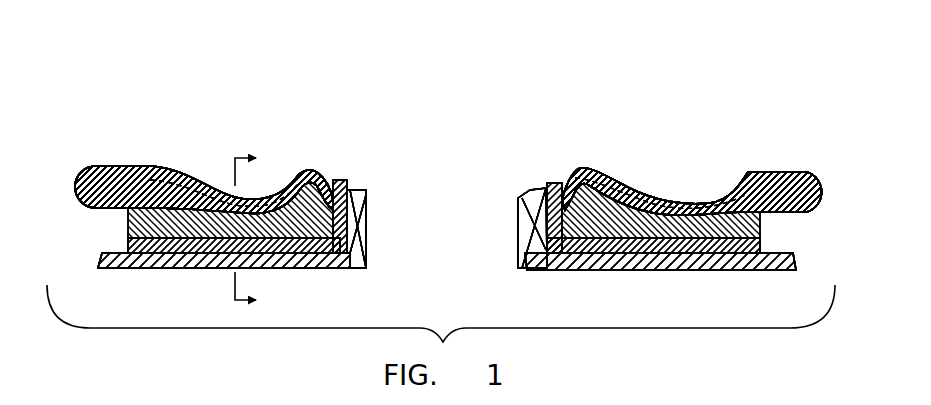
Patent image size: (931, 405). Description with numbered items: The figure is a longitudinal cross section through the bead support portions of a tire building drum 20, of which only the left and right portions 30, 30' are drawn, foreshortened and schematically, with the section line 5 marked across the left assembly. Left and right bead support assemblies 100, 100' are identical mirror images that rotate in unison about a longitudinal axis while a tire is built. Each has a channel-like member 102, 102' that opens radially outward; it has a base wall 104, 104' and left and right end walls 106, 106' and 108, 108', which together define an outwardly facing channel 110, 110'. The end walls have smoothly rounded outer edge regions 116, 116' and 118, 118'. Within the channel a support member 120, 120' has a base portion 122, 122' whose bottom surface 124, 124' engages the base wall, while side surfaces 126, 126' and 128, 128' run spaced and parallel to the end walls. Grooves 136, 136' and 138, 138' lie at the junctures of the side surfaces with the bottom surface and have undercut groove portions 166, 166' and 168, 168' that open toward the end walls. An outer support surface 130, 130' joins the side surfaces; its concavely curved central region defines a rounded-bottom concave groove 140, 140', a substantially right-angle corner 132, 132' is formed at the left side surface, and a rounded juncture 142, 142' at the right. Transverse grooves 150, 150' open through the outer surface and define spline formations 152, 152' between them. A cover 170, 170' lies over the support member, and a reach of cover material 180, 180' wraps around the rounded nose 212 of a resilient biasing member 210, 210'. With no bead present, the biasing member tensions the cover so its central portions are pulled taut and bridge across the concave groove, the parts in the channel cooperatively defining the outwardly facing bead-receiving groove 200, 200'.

The tire building drum 20 is at (510, 228).
The left portion of the tire building drum 30 is at (384, 210).
The right portion of the tire building drum 30' is at (508, 212).
The section line 5- 5 is at (253, 234).
The left bead support assembly 100 is at (215, 128).
The right bead support assembly 100' is at (692, 129).
The channel-like member 102 is at (210, 274).
The channel-like member 102' is at (660, 285).
The base wall 104 is at (234, 277).
The base wall 104' is at (653, 266).
The left end wall 106 is at (211, 237).
The left end wall 106' is at (694, 246).
The right end wall 108 is at (384, 225).
The right end wall 108' is at (512, 228).
The outwardly facing channel 110 is at (209, 154).
The outwardly facing channel 110' is at (692, 142).
The outer edge region 116 is at (190, 210).
The outer edge region 116' is at (699, 211).
The outer edge region 118 is at (357, 199).
The outer edge region 118' is at (563, 184).
The support member 120 is at (222, 285).
The support member 120' is at (660, 287).
The base portion 122 is at (204, 157).
The base portion 122' is at (692, 170).
The bottom surface 124 is at (234, 266).
The bottom surface 124' is at (652, 266).
The left side surface 126 is at (186, 174).
The left side surface 126' is at (719, 188).
The right side surface 128 is at (397, 193).
The right side surface 128' is at (517, 191).
The outer support surface 130 is at (237, 146).
The outer support surface 130' is at (692, 141).
The right-angle corner 132 is at (204, 144).
The right-angle corner 132' is at (692, 177).
The groove 136 is at (193, 254).
The groove 136' is at (676, 280).
The groove 138 is at (272, 266).
The groove 138' is at (631, 273).
The concave groove 140 is at (207, 146).
The concave groove 140' is at (692, 154).
The rounded juncture 142 is at (368, 179).
The rounded juncture 142' is at (573, 171).
The grooves 150 is at (223, 238).
The grooves 150' is at (691, 152).
The spline formations 152 is at (223, 141).
The spline formations 152' is at (660, 247).
The undercut groove portion 166 is at (204, 178).
The undercut groove portion 166' is at (721, 192).
The undercut groove portion 168 is at (351, 237).
The undercut groove portion 168' is at (692, 163).
The cover 170 is at (180, 144).
The cover 170' is at (714, 142).
The reach of cover material 180 is at (180, 189).
The reach of cover material 180' is at (716, 177).
The bead-receiving groove 200 is at (204, 128).
The bead-receiving groove 200' is at (692, 129).
The resilient biasing member 210 is at (185, 189).
The resilient biasing member 210' is at (694, 165).
The rounded nose 212 is at (80, 168).